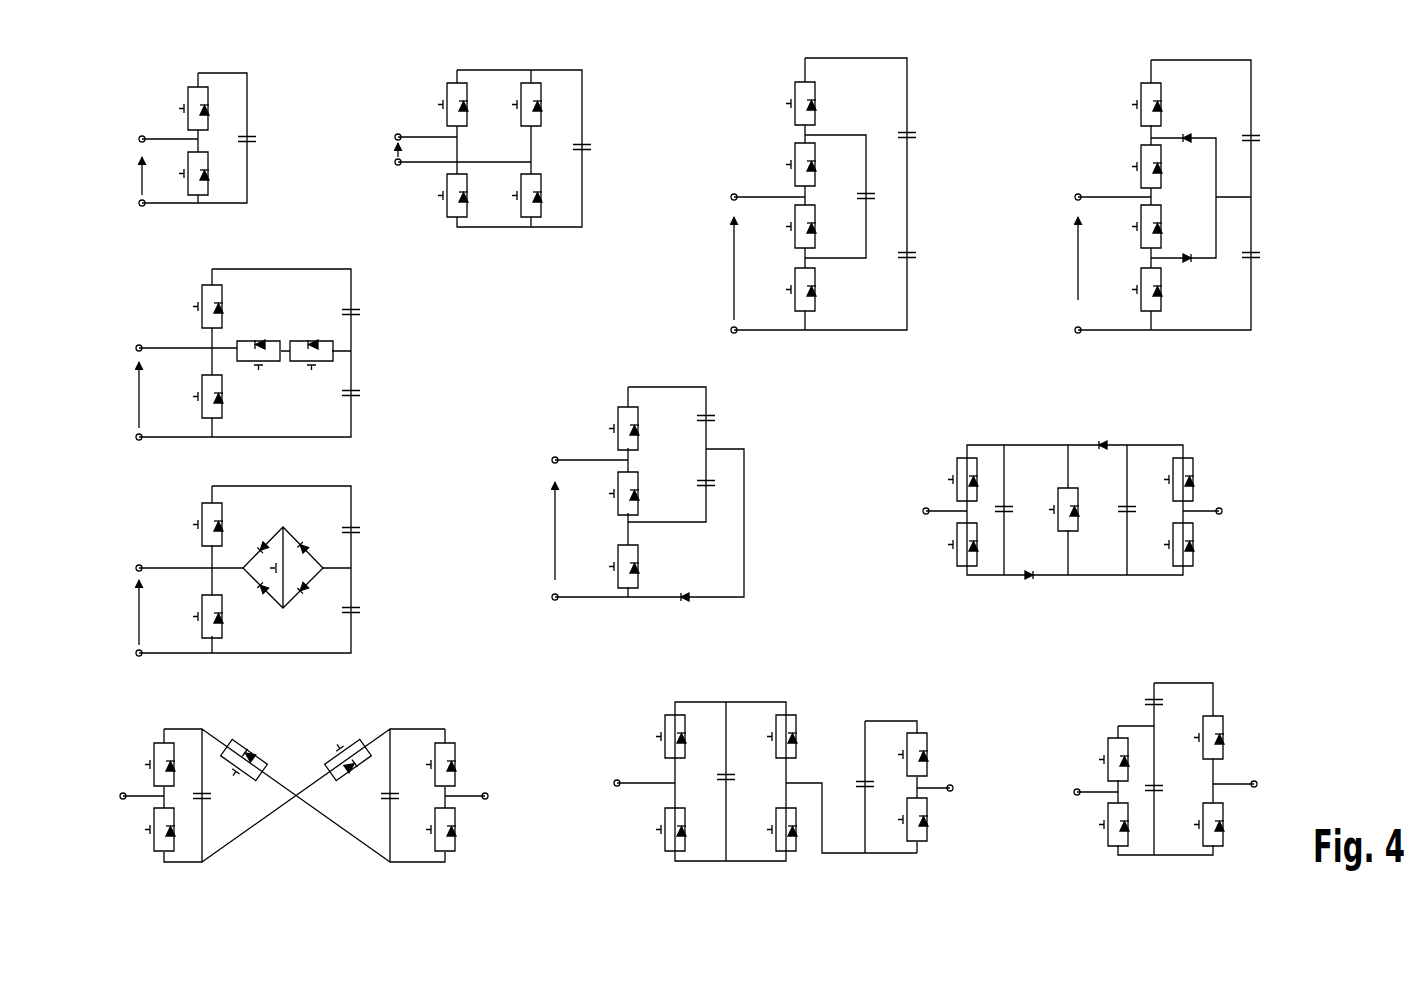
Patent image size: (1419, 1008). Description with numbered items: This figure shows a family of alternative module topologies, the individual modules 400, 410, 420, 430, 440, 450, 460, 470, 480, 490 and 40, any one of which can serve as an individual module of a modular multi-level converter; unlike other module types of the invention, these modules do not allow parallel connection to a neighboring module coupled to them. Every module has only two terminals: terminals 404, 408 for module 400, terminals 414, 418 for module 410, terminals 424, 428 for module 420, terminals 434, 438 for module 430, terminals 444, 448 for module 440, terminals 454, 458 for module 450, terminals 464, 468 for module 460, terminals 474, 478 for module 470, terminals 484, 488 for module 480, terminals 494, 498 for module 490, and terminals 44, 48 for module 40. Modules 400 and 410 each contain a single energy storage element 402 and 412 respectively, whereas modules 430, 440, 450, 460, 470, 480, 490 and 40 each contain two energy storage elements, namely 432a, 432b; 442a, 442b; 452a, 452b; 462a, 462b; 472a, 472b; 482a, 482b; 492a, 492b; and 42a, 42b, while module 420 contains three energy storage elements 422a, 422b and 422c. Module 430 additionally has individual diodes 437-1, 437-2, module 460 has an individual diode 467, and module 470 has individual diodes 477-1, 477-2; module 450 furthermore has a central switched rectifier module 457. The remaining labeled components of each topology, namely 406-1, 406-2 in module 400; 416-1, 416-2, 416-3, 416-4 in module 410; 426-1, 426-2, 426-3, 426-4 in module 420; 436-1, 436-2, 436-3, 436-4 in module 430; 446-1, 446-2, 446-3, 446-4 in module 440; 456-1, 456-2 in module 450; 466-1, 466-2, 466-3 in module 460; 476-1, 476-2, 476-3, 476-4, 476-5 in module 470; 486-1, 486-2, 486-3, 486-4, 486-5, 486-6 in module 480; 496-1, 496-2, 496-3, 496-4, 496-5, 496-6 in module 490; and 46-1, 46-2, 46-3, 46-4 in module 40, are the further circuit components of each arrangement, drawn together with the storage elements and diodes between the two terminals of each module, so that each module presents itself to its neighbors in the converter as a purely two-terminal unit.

The individual module 400 is at (127, 100).
The energy storage element 402 is at (254, 139).
The terminal 404 is at (139, 139).
The switch 406-1 is at (208, 95).
The switch 406-2 is at (208, 185).
The terminal 408 is at (139, 203).
The individual module 410 is at (420, 93).
The energy storage element 412 is at (590, 147).
The terminal 414 is at (397, 133).
The switch 416-1 is at (468, 100).
The switch 416-2 is at (468, 205).
The switch 416-3 is at (541, 90).
The switch 416-4 is at (541, 205).
The terminal 418 is at (397, 166).
The individual module 420 is at (758, 90).
The energy storage element 422a is at (915, 135).
The energy storage element 422b is at (874, 196).
The energy storage element 422c is at (915, 255).
The terminal 424 is at (734, 193).
The switch 426-1 is at (815, 95).
The switch 426-2 is at (815, 155).
The switch 426-3 is at (815, 235).
The switch 426-4 is at (815, 300).
The terminal 428 is at (731, 330).
The individual module 430 is at (1113, 92).
The energy storage element 432a is at (1260, 138).
The energy storage element 432b is at (1260, 255).
The terminal 434 is at (1078, 193).
The switch 436-1 is at (1161, 90).
The switch 436-2 is at (1162, 155).
The switch 436-3 is at (1162, 210).
The switch 436-4 is at (1162, 300).
The individual diode 437-1 is at (1192, 262).
The individual diode 437-2 is at (1192, 134).
The terminal 438 is at (1075, 330).
The individual module 440 is at (147, 318).
The energy storage element 442a is at (360, 312).
The energy storage element 442b is at (360, 393).
The terminal 444 is at (137, 348).
The switch 446-1 is at (223, 298).
The switch 446-2 is at (222, 410).
The switch 446-3 is at (258, 345).
The switch 446-4 is at (309, 365).
The terminal 448 is at (137, 437).
The individual module 450 is at (127, 532).
The energy storage element 452a is at (360, 530).
The energy storage element 452b is at (360, 612).
The terminal 454 is at (137, 568).
The switch 456-1 is at (223, 515).
The switch 456-2 is at (222, 630).
The central switched rectifier module 457 is at (290, 603).
The terminal 458 is at (137, 653).
The individual module 460 is at (583, 432).
The energy storage element 462a is at (716, 418).
The energy storage element 462b is at (716, 483).
The terminal 464 is at (553, 460).
The switch 466-1 is at (640, 415).
The switch 466-2 is at (640, 483).
The switch 466-3 is at (640, 575).
The individual diode 467 is at (690, 600).
The terminal 468 is at (553, 597).
The individual module 470 is at (920, 450).
The energy storage element 472a is at (1012, 509).
The energy storage element 472b is at (1135, 509).
The terminal 474 is at (926, 508).
The switch 476-1 is at (956, 468).
The switch 476-2 is at (957, 555).
The switch 476-3 is at (1194, 478).
The switch 476-4 is at (1194, 555).
The switch 476-5 is at (1078, 505).
The individual diode 477-1 is at (1106, 441).
The individual diode 477-2 is at (1032, 578).
The terminal 478 is at (1222, 511).
The individual module 480 is at (115, 760).
The energy storage element 482a is at (212, 796).
The energy storage element 482b is at (380, 796).
The terminal 484 is at (120, 796).
The switch 486-1 is at (175, 760).
The switch 486-2 is at (175, 840).
The switch 486-3 is at (252, 752).
The switch 486-4 is at (346, 745).
The switch 486-5 is at (456, 760).
The switch 486-6 is at (456, 840).
The terminal 488 is at (488, 796).
The individual module 490 is at (635, 730).
The energy storage element 492a is at (735, 777).
The energy storage element 492b is at (872, 784).
The terminal 494 is at (616, 780).
The switch 496-1 is at (686, 728).
The switch 496-2 is at (686, 840).
The switch 496-3 is at (797, 725).
The switch 496-4 is at (797, 840).
The switch 496-5 is at (928, 750).
The switch 496-6 is at (928, 835).
The terminal 498 is at (952, 791).
The individual module 40 is at (1238, 690).
The capacitor 42a is at (1165, 702).
The capacitor 42b is at (1165, 788).
The terminal 44 is at (1077, 789).
The switch 46-1 is at (1112, 752).
The switch 46-2 is at (1130, 840).
The switch 46-3 is at (1224, 722).
The switch 46-4 is at (1224, 840).
The terminal 48 is at (1257, 787).